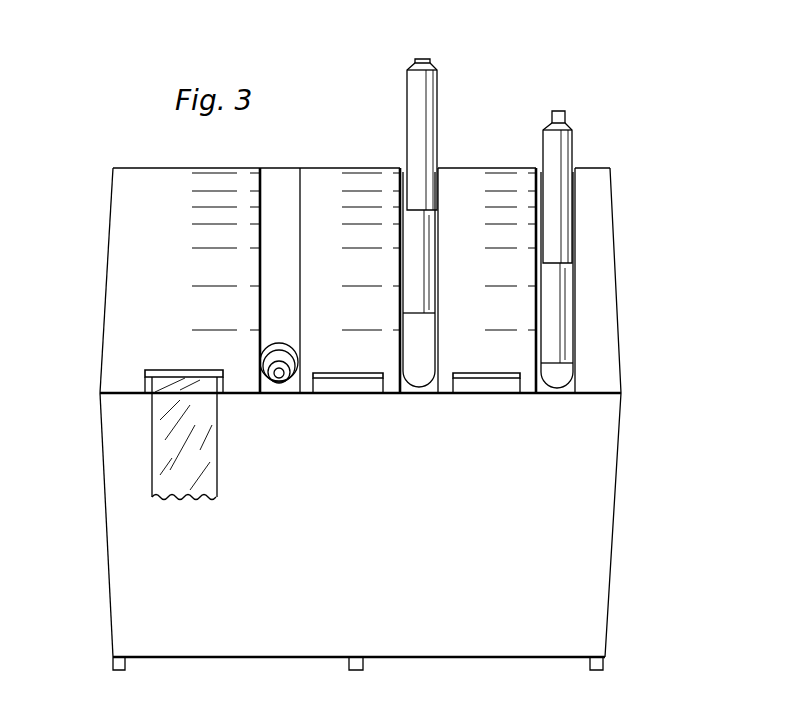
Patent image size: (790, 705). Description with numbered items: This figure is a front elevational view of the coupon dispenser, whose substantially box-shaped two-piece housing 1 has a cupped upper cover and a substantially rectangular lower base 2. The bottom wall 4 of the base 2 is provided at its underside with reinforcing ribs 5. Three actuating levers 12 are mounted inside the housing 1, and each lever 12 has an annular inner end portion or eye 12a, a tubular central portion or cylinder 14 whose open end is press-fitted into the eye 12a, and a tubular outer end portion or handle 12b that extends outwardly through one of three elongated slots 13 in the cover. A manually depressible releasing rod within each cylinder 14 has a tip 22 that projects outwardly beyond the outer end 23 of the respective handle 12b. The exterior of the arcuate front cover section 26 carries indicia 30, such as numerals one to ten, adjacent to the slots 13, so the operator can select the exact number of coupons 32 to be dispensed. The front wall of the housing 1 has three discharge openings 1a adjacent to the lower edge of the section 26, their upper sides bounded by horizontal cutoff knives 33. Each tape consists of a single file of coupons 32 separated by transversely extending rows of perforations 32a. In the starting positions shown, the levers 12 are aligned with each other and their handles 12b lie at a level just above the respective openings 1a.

The housing 1 is at (80, 353).
The discharge openings 1a is at (147, 379).
The base 2 is at (603, 569).
The bottom wall 4 is at (440, 655).
The reinforcing ribs 5 is at (119, 670).
The actuating lever 12 is at (494, 213).
The eye 12a is at (281, 352).
The handle 12b is at (413, 115).
The elongated slots 13 is at (262, 185).
The cylinder 14 is at (586, 300).
The tip 22 is at (422, 58).
The outer end of handle 23 is at (438, 70).
The front cover section 26 is at (118, 279).
The indicia 30 is at (210, 292).
The coupons 32 is at (212, 468).
The rows of perforations 32a is at (175, 398).
The cutoff knives 33 is at (158, 370).